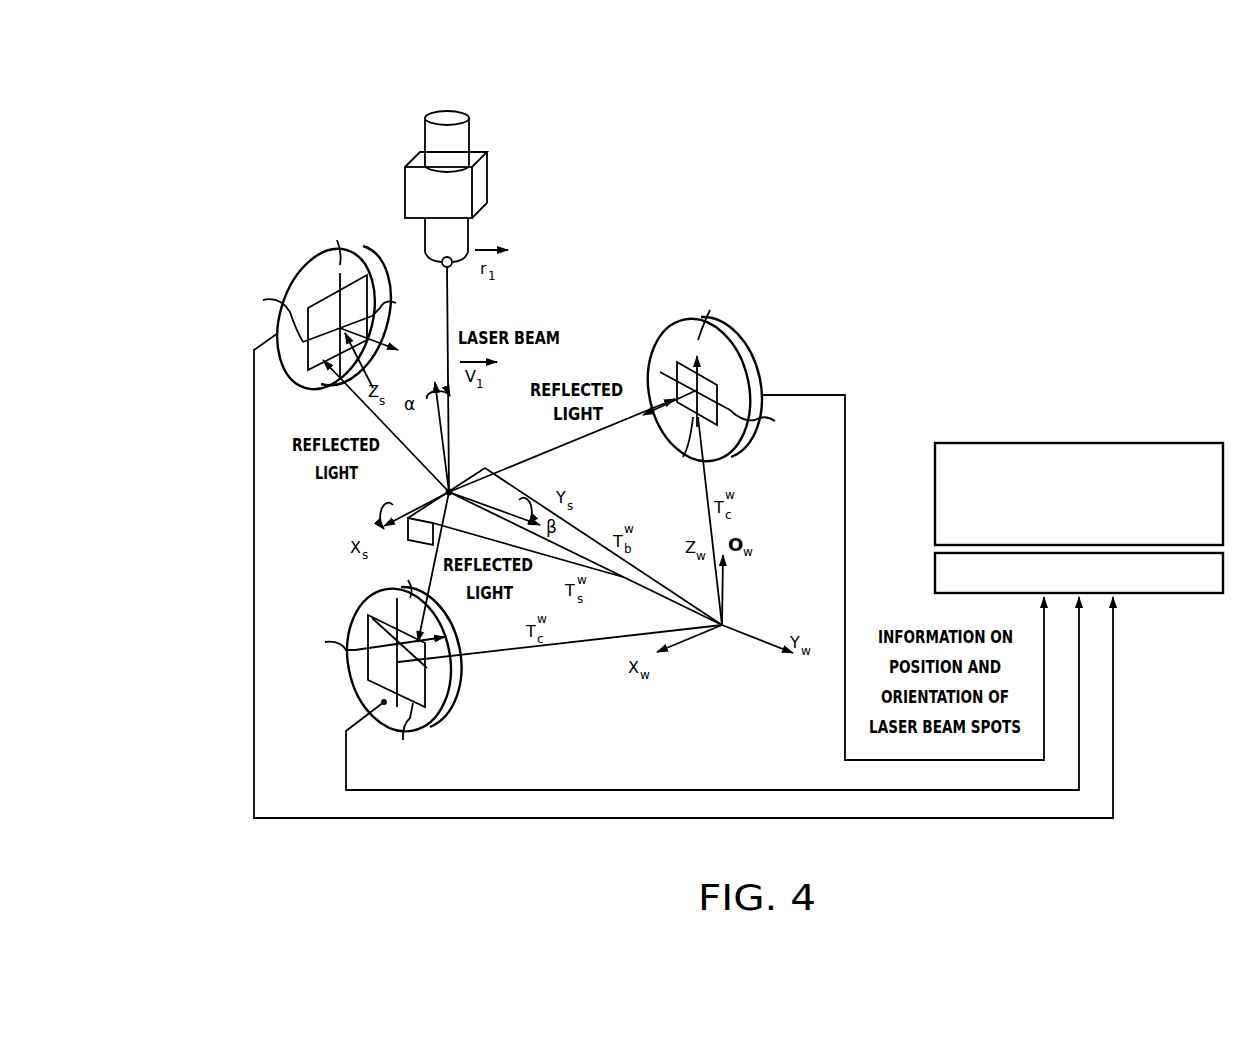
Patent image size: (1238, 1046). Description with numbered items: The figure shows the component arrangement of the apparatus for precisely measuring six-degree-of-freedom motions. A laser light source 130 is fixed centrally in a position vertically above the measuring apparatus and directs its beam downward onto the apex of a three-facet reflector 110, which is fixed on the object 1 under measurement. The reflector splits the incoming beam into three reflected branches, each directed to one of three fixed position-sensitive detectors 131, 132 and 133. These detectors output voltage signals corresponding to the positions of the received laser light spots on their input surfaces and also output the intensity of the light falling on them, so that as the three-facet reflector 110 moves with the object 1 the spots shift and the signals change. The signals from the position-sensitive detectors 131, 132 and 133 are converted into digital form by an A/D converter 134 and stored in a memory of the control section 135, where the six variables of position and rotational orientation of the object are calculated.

The object 1 is at (510, 480).
The three-facet reflector 110 is at (440, 492).
The laser light source 130 is at (462, 128).
The position-sensitive detector 131 is at (460, 703).
The position-sensitive detector 132 is at (743, 350).
The position-sensitive detector 133 is at (308, 262).
The A/D converter 134 is at (1198, 594).
The control section 135 is at (1196, 443).